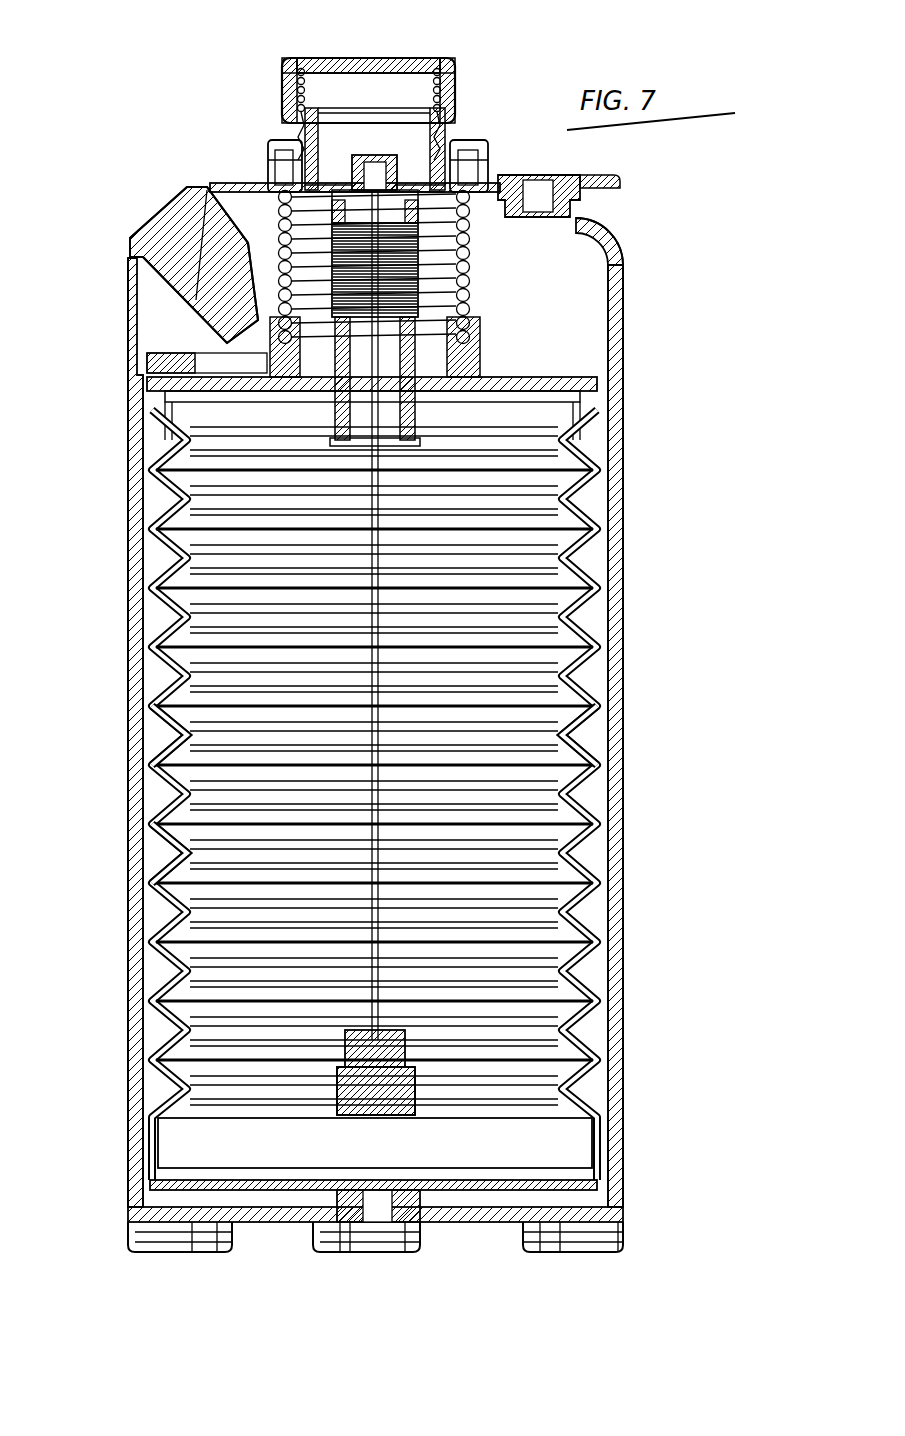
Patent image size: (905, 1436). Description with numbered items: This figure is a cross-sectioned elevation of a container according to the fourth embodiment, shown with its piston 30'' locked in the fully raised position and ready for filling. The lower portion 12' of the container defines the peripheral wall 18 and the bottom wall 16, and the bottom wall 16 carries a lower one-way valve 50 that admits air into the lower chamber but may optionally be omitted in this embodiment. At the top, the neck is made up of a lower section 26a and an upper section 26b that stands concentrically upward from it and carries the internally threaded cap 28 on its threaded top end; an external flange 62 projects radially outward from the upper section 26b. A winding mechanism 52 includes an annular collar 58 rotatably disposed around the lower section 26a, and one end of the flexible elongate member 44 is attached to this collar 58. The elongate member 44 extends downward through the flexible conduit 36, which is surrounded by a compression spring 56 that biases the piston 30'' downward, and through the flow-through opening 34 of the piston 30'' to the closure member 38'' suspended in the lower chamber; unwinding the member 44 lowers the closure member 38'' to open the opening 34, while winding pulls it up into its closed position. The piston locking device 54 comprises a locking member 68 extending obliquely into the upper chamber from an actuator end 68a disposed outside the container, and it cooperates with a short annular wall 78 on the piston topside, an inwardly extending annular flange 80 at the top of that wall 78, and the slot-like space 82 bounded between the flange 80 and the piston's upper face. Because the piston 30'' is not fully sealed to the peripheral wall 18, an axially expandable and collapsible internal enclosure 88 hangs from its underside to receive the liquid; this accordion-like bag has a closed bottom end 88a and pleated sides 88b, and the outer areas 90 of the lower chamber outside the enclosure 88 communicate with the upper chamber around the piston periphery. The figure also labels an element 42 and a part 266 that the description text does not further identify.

The lower portion 12' is at (419, 732).
The bottom wall 16 is at (258, 1215).
The peripheral wall 18 is at (628, 778).
The lower section of the neck 26a is at (448, 126).
The upper section of the neck 26b is at (336, 58).
The cap top wall 266 is at (336, 58).
The cap 28 is at (458, 58).
The piston 30'' is at (456, 264).
The flow-through opening 34 is at (400, 385).
The flexible conduit 36 is at (420, 300).
The closure member 38'' is at (517, 1037).
The flange 42 is at (588, 178).
The flexible elongate member 44 is at (380, 352).
The lower one-way valve 50 is at (355, 1240).
The winding mechanism 52 is at (492, 160).
The piston locking device 54 is at (150, 216).
The compression spring 56 is at (470, 265).
The annular collar 58 is at (272, 166).
The external flange 62 is at (292, 135).
The locking member 68 is at (185, 275).
The actuator end 68a is at (196, 186).
The short annular wall 78 is at (146, 380).
The inwardly extending annular flange 80 is at (178, 354).
The slot-like space 82 is at (166, 408).
The internal enclosure 88 is at (160, 600).
The closed bottom end 88a is at (604, 632).
The pleated sides 88b is at (150, 728).
The outer areas of the lower chamber 90 is at (150, 852).